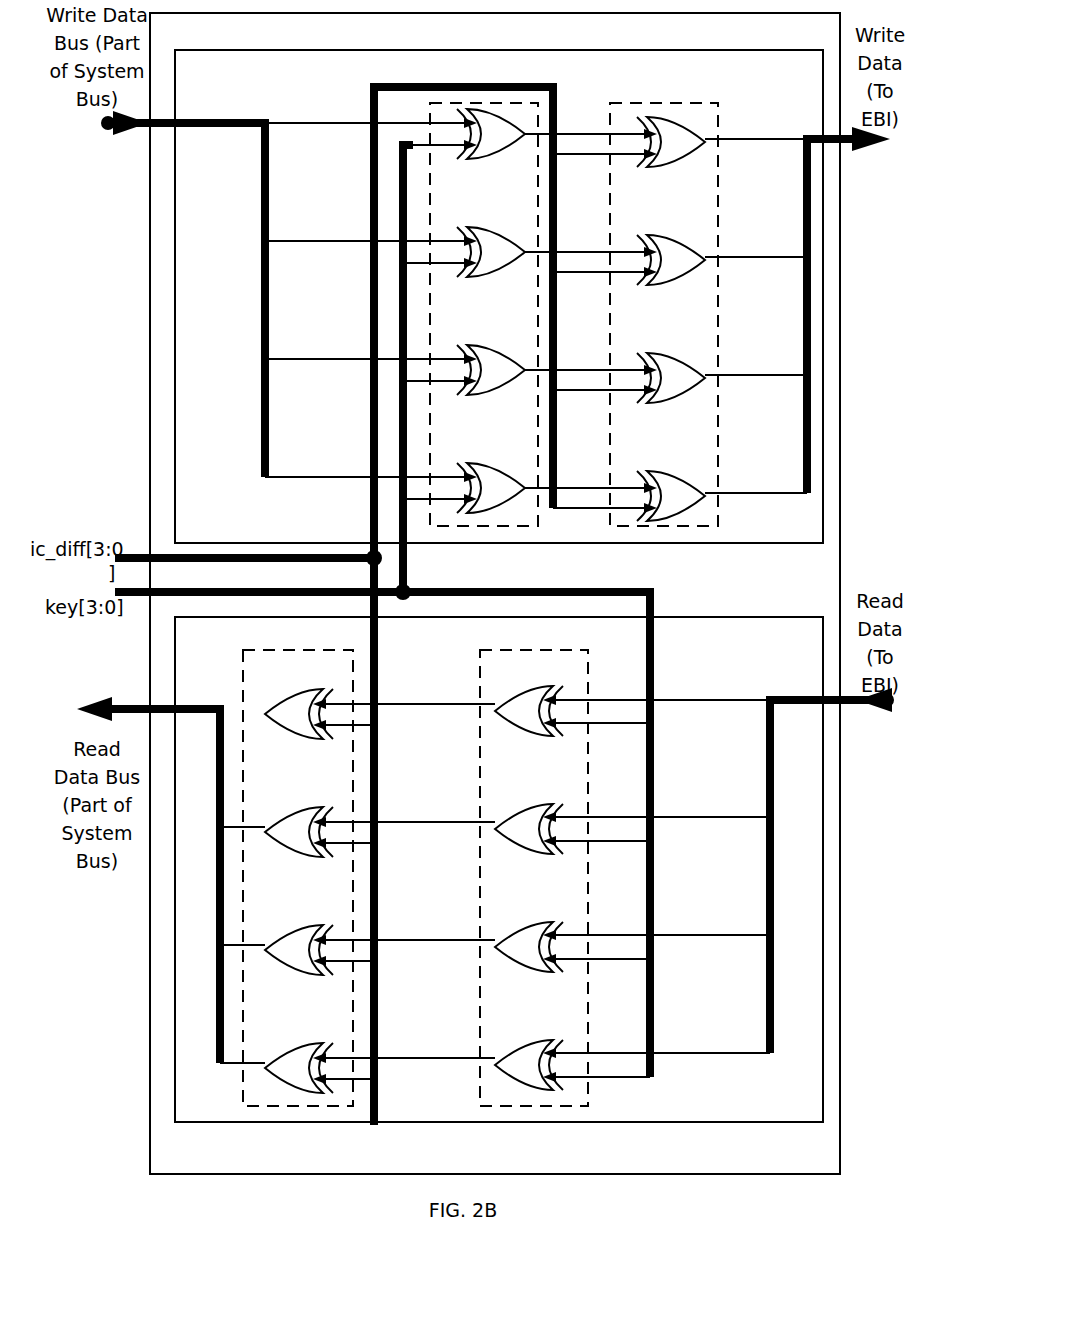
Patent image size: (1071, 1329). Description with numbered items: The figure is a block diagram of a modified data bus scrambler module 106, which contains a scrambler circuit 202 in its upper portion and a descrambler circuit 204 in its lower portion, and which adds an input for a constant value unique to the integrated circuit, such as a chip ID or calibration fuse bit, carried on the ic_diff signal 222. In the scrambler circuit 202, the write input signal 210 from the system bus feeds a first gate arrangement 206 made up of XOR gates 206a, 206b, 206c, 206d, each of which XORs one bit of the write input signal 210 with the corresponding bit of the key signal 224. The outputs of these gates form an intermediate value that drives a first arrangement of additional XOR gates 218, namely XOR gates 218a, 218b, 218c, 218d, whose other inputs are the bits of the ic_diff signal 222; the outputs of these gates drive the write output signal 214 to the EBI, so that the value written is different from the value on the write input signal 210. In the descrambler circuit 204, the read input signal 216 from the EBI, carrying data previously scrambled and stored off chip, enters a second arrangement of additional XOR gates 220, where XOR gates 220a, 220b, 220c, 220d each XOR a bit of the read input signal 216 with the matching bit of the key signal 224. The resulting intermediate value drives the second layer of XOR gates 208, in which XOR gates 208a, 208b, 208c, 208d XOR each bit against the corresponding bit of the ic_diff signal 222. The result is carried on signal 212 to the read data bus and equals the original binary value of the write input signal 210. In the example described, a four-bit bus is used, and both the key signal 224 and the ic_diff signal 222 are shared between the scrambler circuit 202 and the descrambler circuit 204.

The modified data bus scrambler module 106 is at (795, 39).
The scrambler circuit 202 is at (208, 107).
The descrambler circuit 204 is at (735, 677).
The gate arrangement 206 is at (553, 103).
The XOR gate 206a is at (496, 160).
The XOR gate 206b is at (496, 278).
The XOR gate 206c is at (496, 396).
The XOR gate 206d is at (496, 514).
The second layer of XOR gates 208 is at (243, 650).
The XOR gate 208a is at (295, 740).
The XOR gate 208b is at (295, 858).
The XOR gate 208c is at (295, 976).
The XOR gate 208d is at (295, 1094).
The write input signal 210 is at (270, 193).
The signal 212 is at (206, 708).
The write output signal 214 is at (801, 133).
The read input signal 216 is at (768, 759).
The first arrangement of additional XOR gates 218 is at (705, 103).
The XOR gate 218a is at (676, 168).
The XOR gate 218b is at (676, 286).
The XOR gate 218c is at (676, 404).
The XOR gate 218d is at (720, 512).
The second arrangement of additional XOR gates 220 is at (480, 650).
The XOR gate 220a is at (525, 737).
The XOR gate 220b is at (525, 855).
The XOR gate 220c is at (525, 973).
The XOR gate 220d is at (525, 1091).
The ic_diff signal 222 is at (118, 552).
The key signal 224 is at (128, 600).